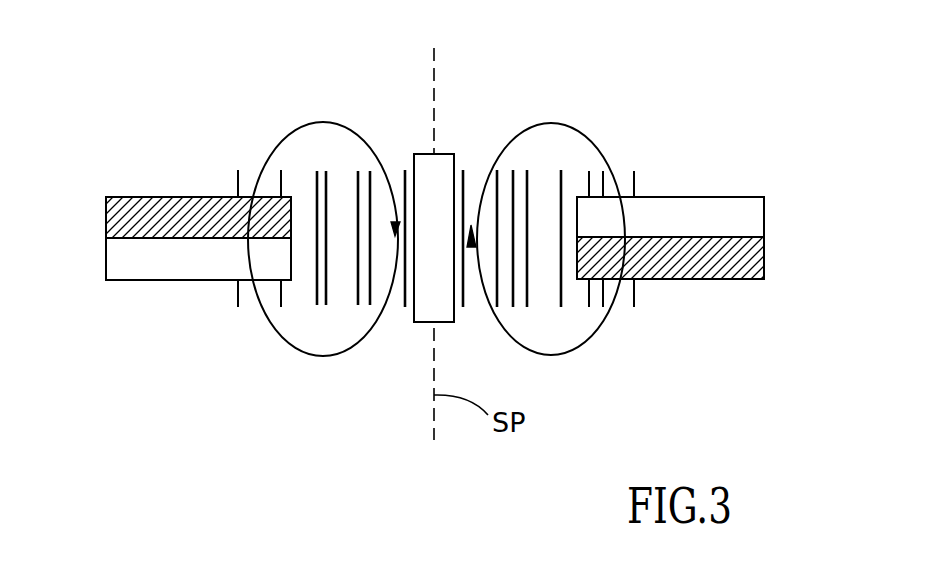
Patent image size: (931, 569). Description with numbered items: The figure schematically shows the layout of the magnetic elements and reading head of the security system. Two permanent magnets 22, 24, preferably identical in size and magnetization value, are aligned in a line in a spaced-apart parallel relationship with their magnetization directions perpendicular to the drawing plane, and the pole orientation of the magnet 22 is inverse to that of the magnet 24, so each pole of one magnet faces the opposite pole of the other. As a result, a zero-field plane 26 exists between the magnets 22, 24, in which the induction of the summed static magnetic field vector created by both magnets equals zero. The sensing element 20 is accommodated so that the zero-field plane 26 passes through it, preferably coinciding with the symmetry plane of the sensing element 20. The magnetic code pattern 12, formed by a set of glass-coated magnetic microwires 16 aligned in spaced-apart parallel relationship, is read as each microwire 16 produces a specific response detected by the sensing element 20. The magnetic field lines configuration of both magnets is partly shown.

The magnetic code pattern 12 is at (537, 152).
The glass-coated magnetic microwires 16 is at (562, 307).
The sensing element 20 is at (427, 153).
The permanent magnet 22 is at (107, 239).
The permanent magnet 24 is at (764, 232).
The zero-field plane 26 is at (434, 77).